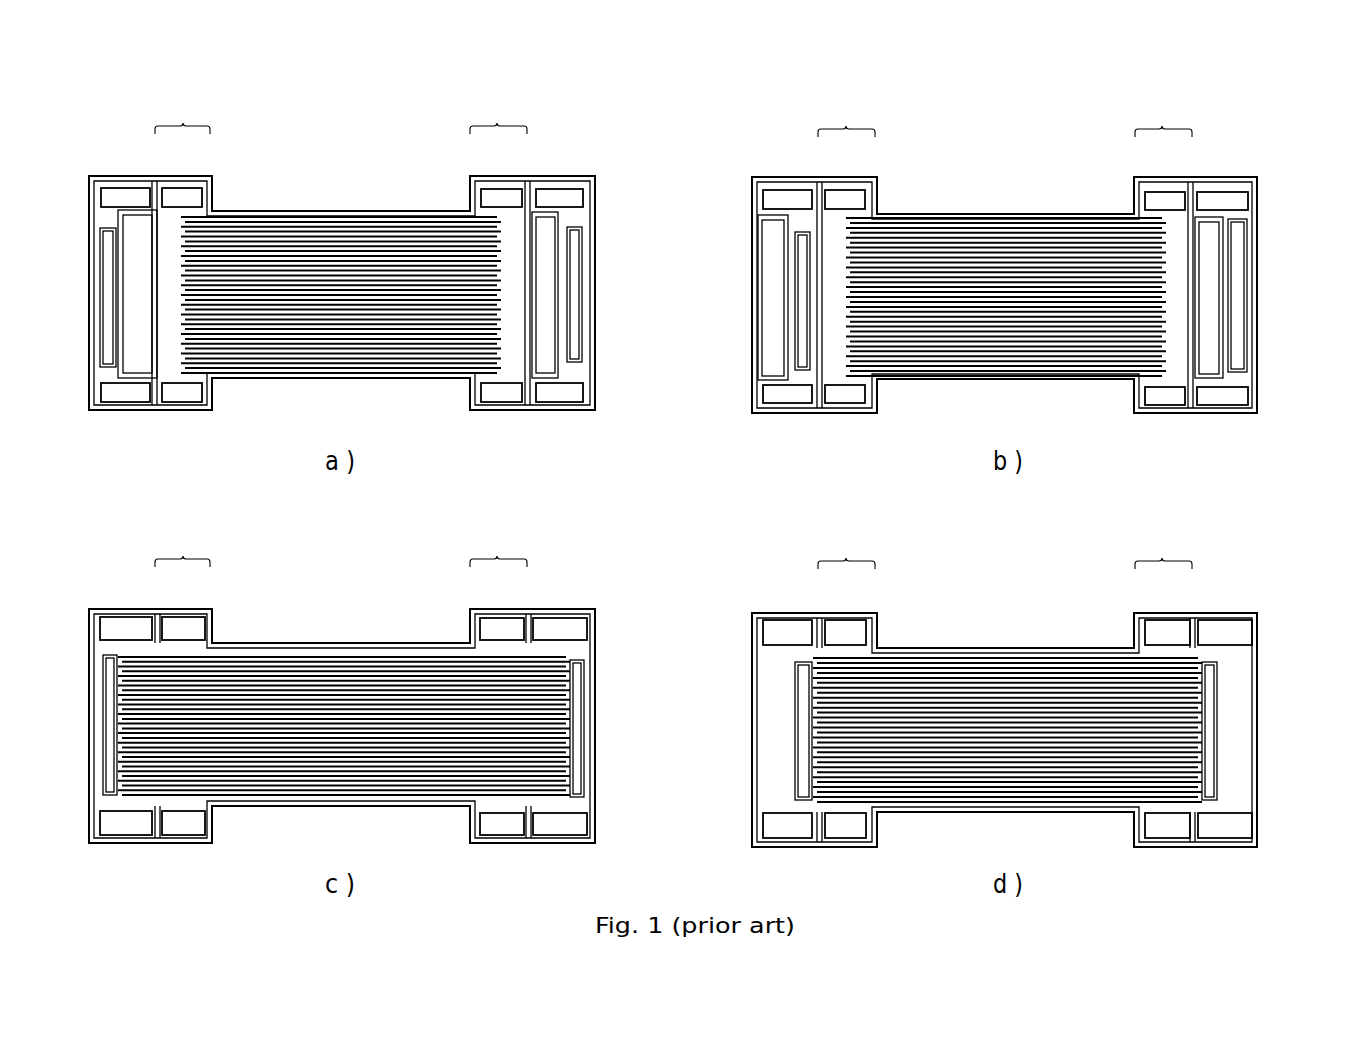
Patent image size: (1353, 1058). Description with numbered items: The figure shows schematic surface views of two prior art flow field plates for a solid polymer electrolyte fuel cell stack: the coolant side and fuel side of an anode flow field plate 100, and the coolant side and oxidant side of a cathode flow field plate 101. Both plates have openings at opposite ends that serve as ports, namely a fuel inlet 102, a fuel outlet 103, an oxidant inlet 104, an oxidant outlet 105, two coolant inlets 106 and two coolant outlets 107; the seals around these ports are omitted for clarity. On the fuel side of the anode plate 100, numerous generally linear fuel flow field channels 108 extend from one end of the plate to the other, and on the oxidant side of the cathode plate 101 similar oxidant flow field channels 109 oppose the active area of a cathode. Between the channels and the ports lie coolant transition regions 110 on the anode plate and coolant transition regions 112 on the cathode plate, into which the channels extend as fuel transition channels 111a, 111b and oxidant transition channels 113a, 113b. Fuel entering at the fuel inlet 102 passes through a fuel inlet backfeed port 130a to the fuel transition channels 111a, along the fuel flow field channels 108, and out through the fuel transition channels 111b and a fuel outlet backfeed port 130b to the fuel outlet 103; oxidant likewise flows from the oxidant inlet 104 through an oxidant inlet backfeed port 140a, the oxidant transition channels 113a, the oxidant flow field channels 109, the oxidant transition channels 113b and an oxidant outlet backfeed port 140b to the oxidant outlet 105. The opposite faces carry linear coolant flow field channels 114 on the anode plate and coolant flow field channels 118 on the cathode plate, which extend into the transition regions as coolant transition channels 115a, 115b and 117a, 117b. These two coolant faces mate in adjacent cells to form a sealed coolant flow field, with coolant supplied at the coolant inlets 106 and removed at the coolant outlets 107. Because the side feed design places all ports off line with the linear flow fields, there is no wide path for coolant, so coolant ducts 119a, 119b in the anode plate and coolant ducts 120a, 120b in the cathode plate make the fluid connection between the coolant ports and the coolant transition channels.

In FIG. 1a, the anode flow field plate 100 is at (618, 206).
In FIG. 1c, the anode flow field plate 100 is at (618, 651).
In FIG. 1b, the cathode flow field plate 101 is at (1281, 208).
In FIG. 1d, the cathode flow field plate 101 is at (1281, 653).
In FIG. 1a, the fuel inlet 102 is at (125, 193).
In FIG. 1b, the fuel inlet 102 is at (1220, 199).
In FIG. 1c, the fuel inlet 102 is at (125, 826).
In FIG. 1d, the fuel inlet 102 is at (1224, 830).
In FIG. 1a, the fuel outlet 103 is at (557, 392).
In FIG. 1b, the fuel outlet 103 is at (788, 394).
In FIG. 1c, the fuel outlet 103 is at (558, 626).
In FIG. 1d, the fuel outlet 103 is at (788, 630).
In FIG. 1a, the oxidant inlet 104 is at (124, 392).
In FIG. 1b, the oxidant inlet 104 is at (1220, 396).
In FIG. 1c, the oxidant inlet 104 is at (125, 626).
In FIG. 1d, the oxidant inlet 104 is at (1222, 630).
In FIG. 1a, the oxidant outlet 105 is at (556, 195).
In FIG. 1b, the oxidant outlet 105 is at (788, 196).
In FIG. 1c, the oxidant outlet 105 is at (560, 828).
In FIG. 1d, the oxidant outlet 105 is at (789, 830).
In FIG. 1a, the coolant inlets 106 is at (182, 194).
In FIG. 1b, the coolant inlets 106 is at (1165, 199).
In FIG. 1c, the coolant inlets 106 is at (183, 626).
In FIG. 1d, the coolant inlets 106 is at (1165, 630).
In FIG. 1a, the coolant outlets 107 is at (502, 195).
In FIG. 1b, the coolant outlets 107 is at (845, 196).
In FIG. 1c, the coolant outlets 107 is at (502, 626).
In FIG. 1d, the coolant outlets 107 is at (845, 630).
In FIG. 1c, the fuel flow field channels 108 is at (344, 719).
In FIG. 1d, the oxidant flow field channels 109 is at (1007, 722).
In FIG. 1a, the coolant transition regions 110 is at (183, 120).
In FIG. 1c, the coolant transition regions 110 is at (183, 553).
In FIG. 1c, the fuel transition channels 111a is at (225, 750).
In FIG. 1c, the fuel transition channels 111b is at (470, 740).
In FIG. 1b, the coolant transition regions 112 is at (846, 124).
In FIG. 1d, the coolant transition regions 112 is at (846, 555).
In FIG. 1d, the oxidant transition channels 113a is at (1120, 755).
In FIG. 1d, the oxidant transition channels 113b is at (885, 752).
In FIG. 1a, the coolant flow field channels 114 is at (341, 287).
In FIG. 1a, the coolant transition channels 115a is at (220, 315).
In FIG. 1a, the coolant transition channels 115b is at (447, 330).
In FIG. 1b, the coolant transition channels 117a is at (1120, 330).
In FIG. 1b, the coolant transition channels 117b is at (885, 320).
In FIG. 1b, the coolant flow field channels 118 is at (1006, 289).
In FIG. 1a, the coolant duct 119a is at (172, 257).
In FIG. 1a, the coolant duct 119b is at (510, 258).
In FIG. 1b, the coolant duct 120a is at (1180, 262).
In FIG. 1b, the coolant duct 120b is at (832, 260).
In FIG. 1a, the fuel inlet backfeed port 130a is at (105, 293).
In FIG. 1c, the fuel inlet backfeed port 130a is at (108, 725).
In FIG. 1a, the fuel outlet backfeed port 130b is at (580, 297).
In FIG. 1c, the fuel outlet backfeed port 130b is at (577, 730).
In FIG. 1b, the oxidant inlet backfeed port 140a is at (1205, 298).
In FIG. 1d, the oxidant inlet backfeed port 140a is at (1210, 735).
In FIG. 1b, the oxidant outlet backfeed port 140b is at (805, 297).
In FIG. 1d, the oxidant outlet backfeed port 140b is at (805, 730).